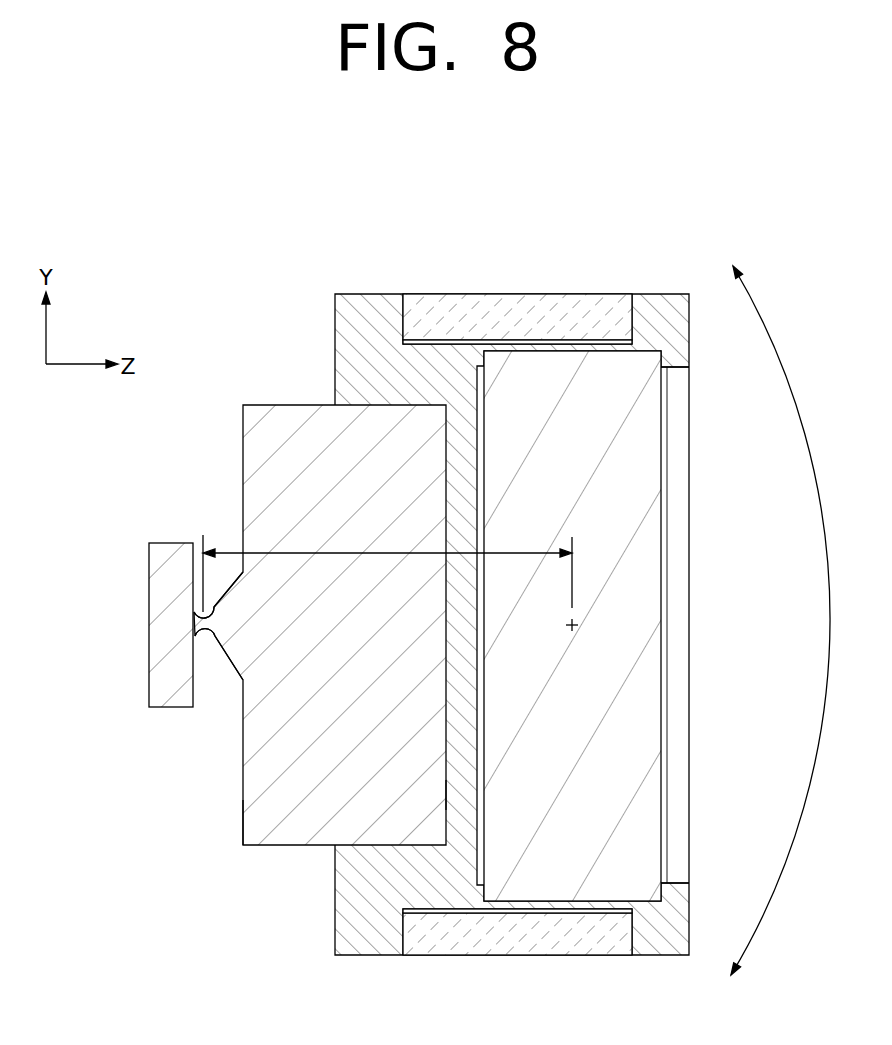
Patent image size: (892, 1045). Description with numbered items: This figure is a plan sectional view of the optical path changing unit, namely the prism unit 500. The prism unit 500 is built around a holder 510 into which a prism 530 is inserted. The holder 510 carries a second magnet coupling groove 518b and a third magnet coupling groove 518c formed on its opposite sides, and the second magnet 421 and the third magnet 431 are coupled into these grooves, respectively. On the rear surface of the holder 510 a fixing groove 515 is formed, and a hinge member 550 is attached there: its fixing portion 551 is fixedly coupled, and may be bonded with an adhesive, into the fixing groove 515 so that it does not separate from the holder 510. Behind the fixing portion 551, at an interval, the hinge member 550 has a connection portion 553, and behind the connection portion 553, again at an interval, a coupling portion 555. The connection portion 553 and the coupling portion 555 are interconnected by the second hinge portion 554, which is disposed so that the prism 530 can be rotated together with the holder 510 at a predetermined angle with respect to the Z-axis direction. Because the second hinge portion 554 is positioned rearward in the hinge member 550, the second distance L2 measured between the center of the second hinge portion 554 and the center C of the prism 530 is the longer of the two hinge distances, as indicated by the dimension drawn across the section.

The prism unit 500 is at (417, 152).
The holder 510 is at (328, 331).
The third magnet 431 is at (526, 298).
The second magnet 421 is at (537, 946).
The third magnet coupling groove 518c is at (445, 346).
The second magnet coupling groove 518b is at (458, 910).
The hinge member 550 is at (261, 653).
The fixing portion 551 is at (427, 770).
The connection portion 553 is at (248, 815).
The second hinge portion 554 is at (196, 645).
The coupling portion 555 is at (157, 683).
The prism 530 is at (676, 687).
The fixing groove 515 is at (445, 797).
The second distance L2 is at (387, 569).
The center of the prism C is at (575, 627).